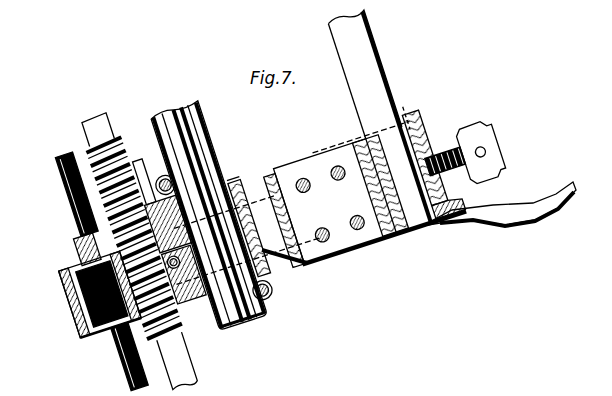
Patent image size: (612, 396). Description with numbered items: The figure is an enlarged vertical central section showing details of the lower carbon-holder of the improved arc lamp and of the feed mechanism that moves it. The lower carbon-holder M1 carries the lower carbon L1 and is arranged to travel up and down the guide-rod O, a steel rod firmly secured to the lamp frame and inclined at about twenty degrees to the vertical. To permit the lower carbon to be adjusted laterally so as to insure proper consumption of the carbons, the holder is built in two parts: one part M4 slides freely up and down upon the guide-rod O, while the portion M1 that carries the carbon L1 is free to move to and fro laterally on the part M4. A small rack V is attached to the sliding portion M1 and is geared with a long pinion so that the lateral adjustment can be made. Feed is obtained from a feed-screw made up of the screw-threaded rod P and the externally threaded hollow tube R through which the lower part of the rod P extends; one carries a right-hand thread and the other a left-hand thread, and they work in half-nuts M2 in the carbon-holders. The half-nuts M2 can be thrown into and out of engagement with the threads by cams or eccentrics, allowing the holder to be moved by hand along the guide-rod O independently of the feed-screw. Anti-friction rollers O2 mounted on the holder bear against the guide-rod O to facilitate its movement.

The lower carbon L1 is at (350, 86).
The lower carbon-holder M1 is at (416, 118).
The half-nut M2 is at (190, 302).
The sliding part of lower carbon-holder M4 is at (236, 193).
The guide-rod O is at (202, 126).
The anti-friction roller O2 is at (163, 186).
The screw-threaded rod P is at (139, 252).
The hollow rod or tube R is at (125, 167).
The rack V is at (67, 198).